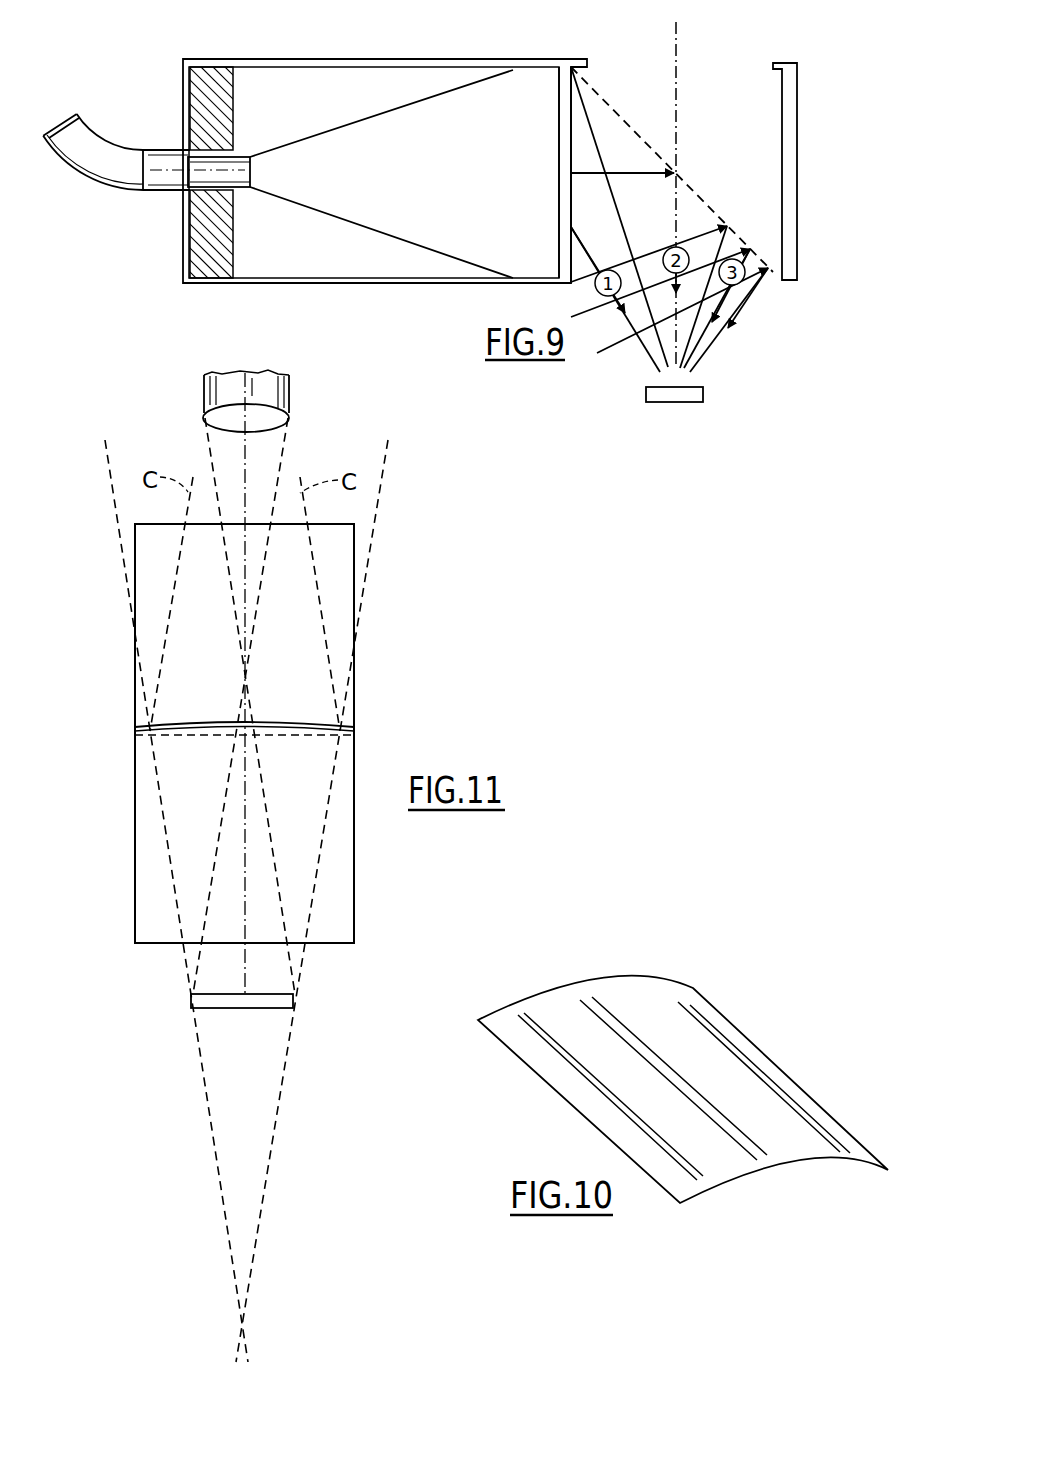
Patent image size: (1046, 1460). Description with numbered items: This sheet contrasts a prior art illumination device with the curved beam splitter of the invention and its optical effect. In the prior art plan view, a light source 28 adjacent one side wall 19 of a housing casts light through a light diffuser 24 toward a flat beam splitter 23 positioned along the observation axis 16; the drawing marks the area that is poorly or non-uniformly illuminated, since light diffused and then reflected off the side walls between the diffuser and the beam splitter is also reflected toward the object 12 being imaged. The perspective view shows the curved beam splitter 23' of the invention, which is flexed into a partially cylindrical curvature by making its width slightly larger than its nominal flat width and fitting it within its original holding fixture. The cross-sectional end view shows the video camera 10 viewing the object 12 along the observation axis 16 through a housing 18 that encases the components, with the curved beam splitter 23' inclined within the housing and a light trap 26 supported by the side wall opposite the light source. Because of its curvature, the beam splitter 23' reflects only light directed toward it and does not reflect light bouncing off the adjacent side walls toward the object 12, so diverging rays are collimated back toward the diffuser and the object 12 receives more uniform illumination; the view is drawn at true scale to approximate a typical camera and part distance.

In FIG. 11, the video camera 10 is at (205, 412).
In FIG. 9, the object 12 is at (705, 393).
In FIG. 11, the object 12 is at (295, 1000).
In FIG. 9, the observation axis 16 is at (678, 82).
In FIG. 11, the housing 18 is at (135, 540).
In FIG. 9, the side walls 19 is at (799, 240).
In FIG. 9, the beam splitter 23 is at (672, 169).
In FIG. 11, the curved beam splitter 23' is at (274, 713).
In FIG. 10, the curved beam splitter 23' is at (683, 1089).
In FIG. 9, the light diffuser 24 is at (562, 95).
In FIG. 11, the light trap 26 is at (312, 665).
In FIG. 9, the light source 28 is at (90, 180).